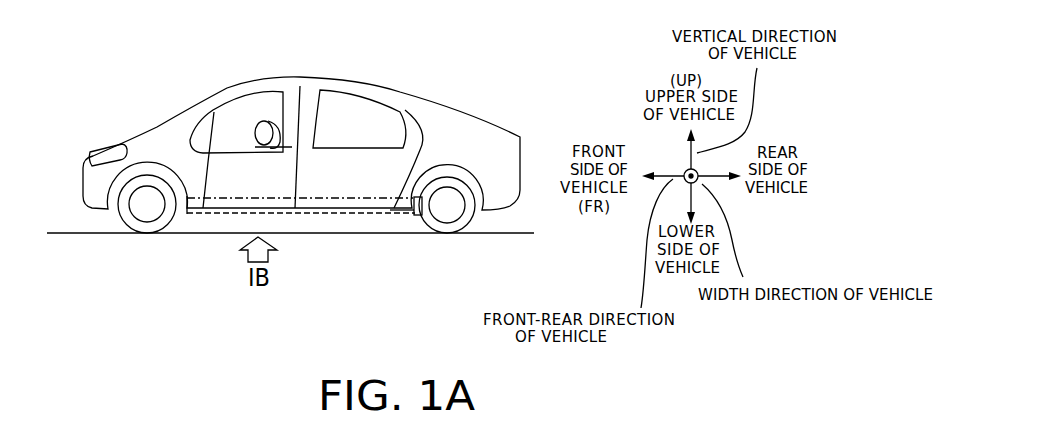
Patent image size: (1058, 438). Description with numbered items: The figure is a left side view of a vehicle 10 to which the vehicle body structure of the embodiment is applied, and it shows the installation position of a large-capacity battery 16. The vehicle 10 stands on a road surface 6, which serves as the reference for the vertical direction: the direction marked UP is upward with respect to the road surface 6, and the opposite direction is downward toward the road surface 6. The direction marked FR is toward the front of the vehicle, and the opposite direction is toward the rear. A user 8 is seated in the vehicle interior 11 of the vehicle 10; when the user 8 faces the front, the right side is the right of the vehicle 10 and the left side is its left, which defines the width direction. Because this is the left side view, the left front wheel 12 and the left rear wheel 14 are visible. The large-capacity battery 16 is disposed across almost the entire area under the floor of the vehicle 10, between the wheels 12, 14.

The road surface 6 is at (70, 229).
The user 8 is at (276, 120).
The vehicle 10 is at (150, 127).
The vehicle interior 11 is at (240, 148).
The left front wheel 12 is at (124, 222).
The left rear wheel 14 is at (474, 213).
The large-capacity battery 16 is at (317, 214).